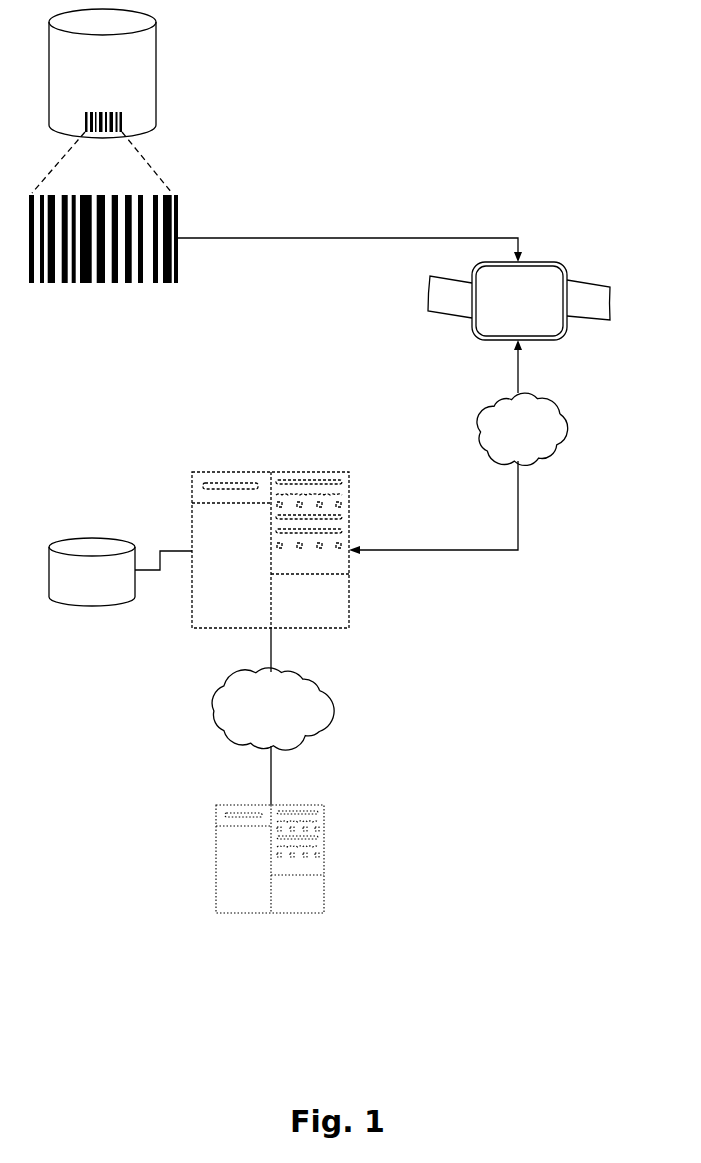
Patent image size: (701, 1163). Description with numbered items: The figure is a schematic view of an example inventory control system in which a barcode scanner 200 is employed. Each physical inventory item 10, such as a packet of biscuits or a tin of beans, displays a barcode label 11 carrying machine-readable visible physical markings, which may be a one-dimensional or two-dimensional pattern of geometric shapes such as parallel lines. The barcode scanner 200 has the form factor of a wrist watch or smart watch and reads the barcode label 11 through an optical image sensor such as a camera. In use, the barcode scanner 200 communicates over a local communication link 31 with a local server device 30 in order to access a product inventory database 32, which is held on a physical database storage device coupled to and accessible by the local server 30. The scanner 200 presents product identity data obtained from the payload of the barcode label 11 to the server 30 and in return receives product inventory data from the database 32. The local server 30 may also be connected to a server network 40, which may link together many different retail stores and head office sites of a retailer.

The physical inventory item 10 is at (150, 45).
The barcode label 11 is at (178, 220).
The barcode scanner 200 is at (563, 262).
The local server device 30 is at (349, 482).
The local communication link 31 is at (520, 513).
The product inventory database 32 is at (95, 600).
The server network 40 is at (320, 840).